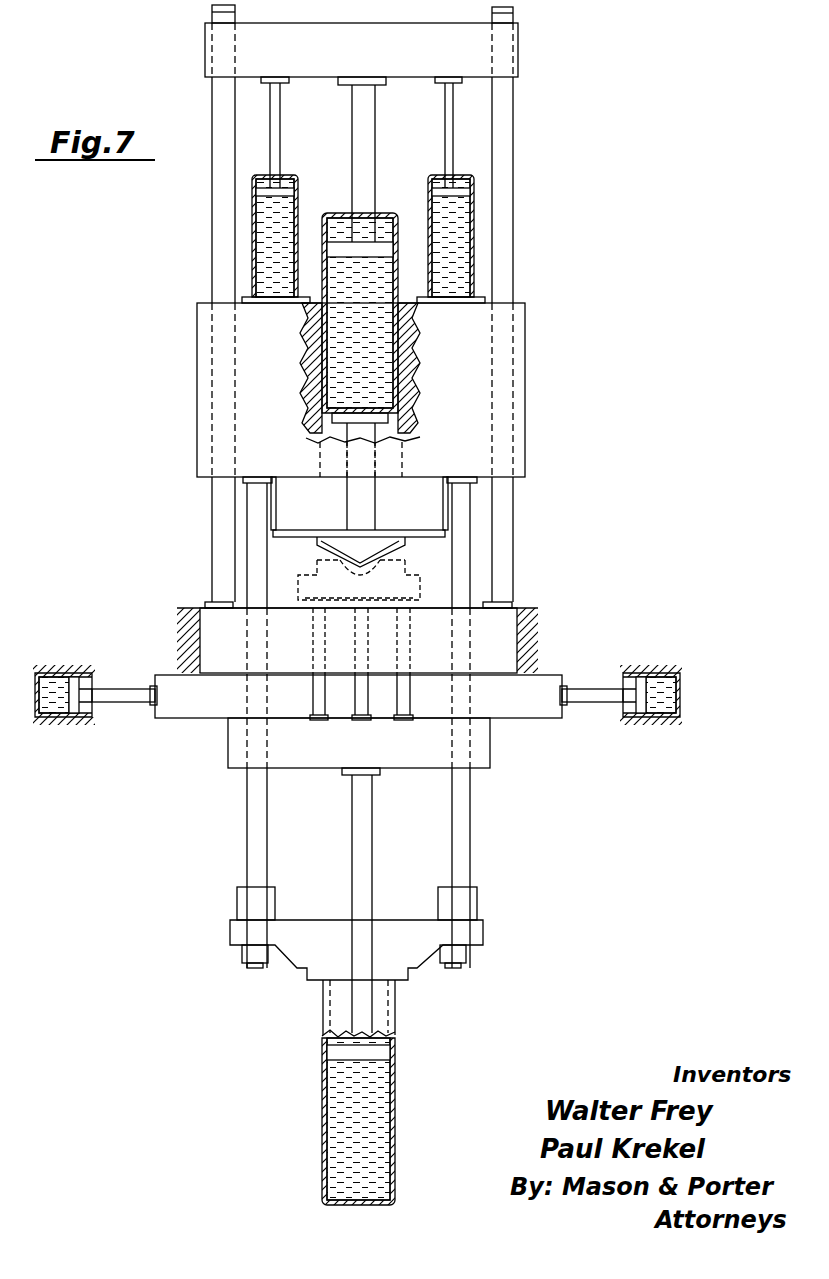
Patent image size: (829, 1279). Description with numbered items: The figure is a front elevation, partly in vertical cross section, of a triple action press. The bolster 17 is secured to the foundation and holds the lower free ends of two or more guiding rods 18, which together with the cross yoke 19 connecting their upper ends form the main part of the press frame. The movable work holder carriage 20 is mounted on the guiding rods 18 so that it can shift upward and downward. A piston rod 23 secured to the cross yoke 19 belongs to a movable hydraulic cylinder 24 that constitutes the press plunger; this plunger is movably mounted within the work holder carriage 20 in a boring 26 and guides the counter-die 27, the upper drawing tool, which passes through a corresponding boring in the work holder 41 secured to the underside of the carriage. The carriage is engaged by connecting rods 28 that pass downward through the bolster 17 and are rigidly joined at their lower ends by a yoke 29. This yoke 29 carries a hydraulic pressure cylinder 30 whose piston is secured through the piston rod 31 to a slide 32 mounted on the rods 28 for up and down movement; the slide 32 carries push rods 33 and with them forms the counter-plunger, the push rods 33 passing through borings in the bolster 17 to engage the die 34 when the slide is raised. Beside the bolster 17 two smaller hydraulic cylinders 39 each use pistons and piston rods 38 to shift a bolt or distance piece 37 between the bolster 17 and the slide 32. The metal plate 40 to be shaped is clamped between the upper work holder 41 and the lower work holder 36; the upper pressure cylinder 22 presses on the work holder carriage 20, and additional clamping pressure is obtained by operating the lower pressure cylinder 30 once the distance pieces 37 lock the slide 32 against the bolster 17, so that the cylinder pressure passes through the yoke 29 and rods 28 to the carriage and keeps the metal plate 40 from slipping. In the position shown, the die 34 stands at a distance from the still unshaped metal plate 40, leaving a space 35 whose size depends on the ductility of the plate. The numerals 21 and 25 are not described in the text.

The bolster 17 is at (500, 645).
The guiding rods 18 is at (505, 172).
The cross yoke 19 is at (478, 47).
The work holder carriage 20 is at (520, 385).
The piston rods 21 is at (275, 113).
The upper pressure cylinder 22 is at (300, 185).
The piston rod 23 is at (363, 132).
The movable hydraulic cylinder 24 is at (322, 375).
The packing 25 is at (395, 437).
The boring 26 is at (330, 433).
The counter-die 27 is at (375, 510).
The connecting rods 28 is at (257, 503).
The yoke 29 is at (305, 953).
The hydraulic pressure cylinder 30 is at (325, 1012).
The piston rod 31 is at (365, 825).
The slide 32 is at (478, 757).
The push rods 33 is at (405, 710).
The die 34 is at (385, 588).
The space 35 is at (325, 555).
The lower work holder 36 is at (290, 570).
The distance piece 37 is at (207, 704).
The piston rods 38 is at (112, 690).
The hydraulic cylinders 39 is at (52, 670).
The metal plate 40 is at (295, 533).
The work holder 41 is at (450, 492).